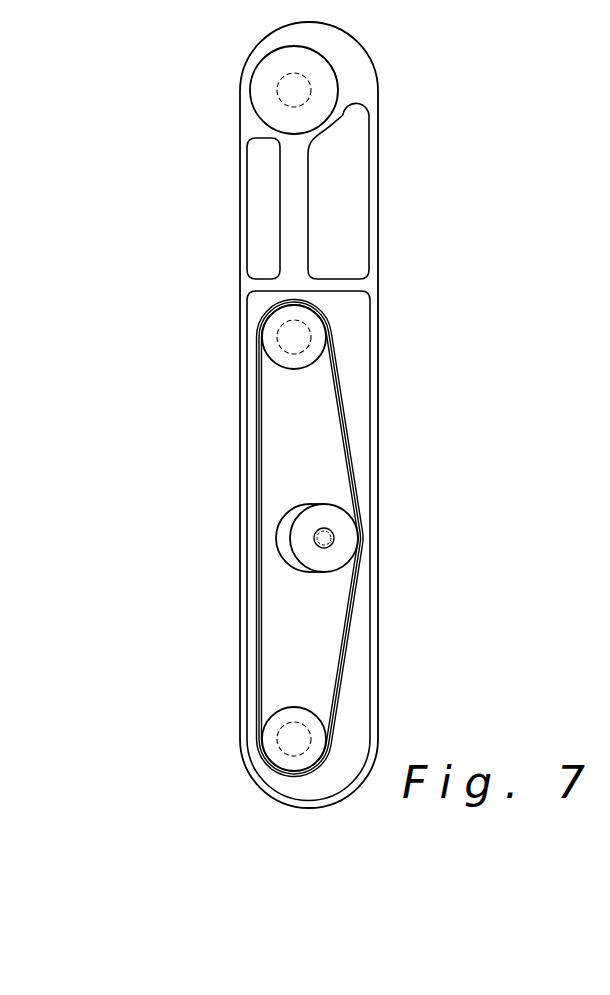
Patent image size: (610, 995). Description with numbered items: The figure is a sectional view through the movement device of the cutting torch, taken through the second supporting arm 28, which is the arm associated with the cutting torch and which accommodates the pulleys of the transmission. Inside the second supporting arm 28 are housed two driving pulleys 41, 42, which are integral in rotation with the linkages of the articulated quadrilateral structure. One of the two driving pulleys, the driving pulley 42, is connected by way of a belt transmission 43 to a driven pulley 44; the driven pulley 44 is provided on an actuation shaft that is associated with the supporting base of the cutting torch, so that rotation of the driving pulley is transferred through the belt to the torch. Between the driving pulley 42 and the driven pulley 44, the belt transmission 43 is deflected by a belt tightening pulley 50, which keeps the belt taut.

The bracket / support arm 28 is at (385, 315).
The upper pivot pulley 41 is at (283, 89).
The upper belt pulley 42 is at (288, 337).
The belt 43 is at (350, 663).
The lower belt pulley 44 is at (292, 737).
The tensioner pulley 50 is at (323, 542).